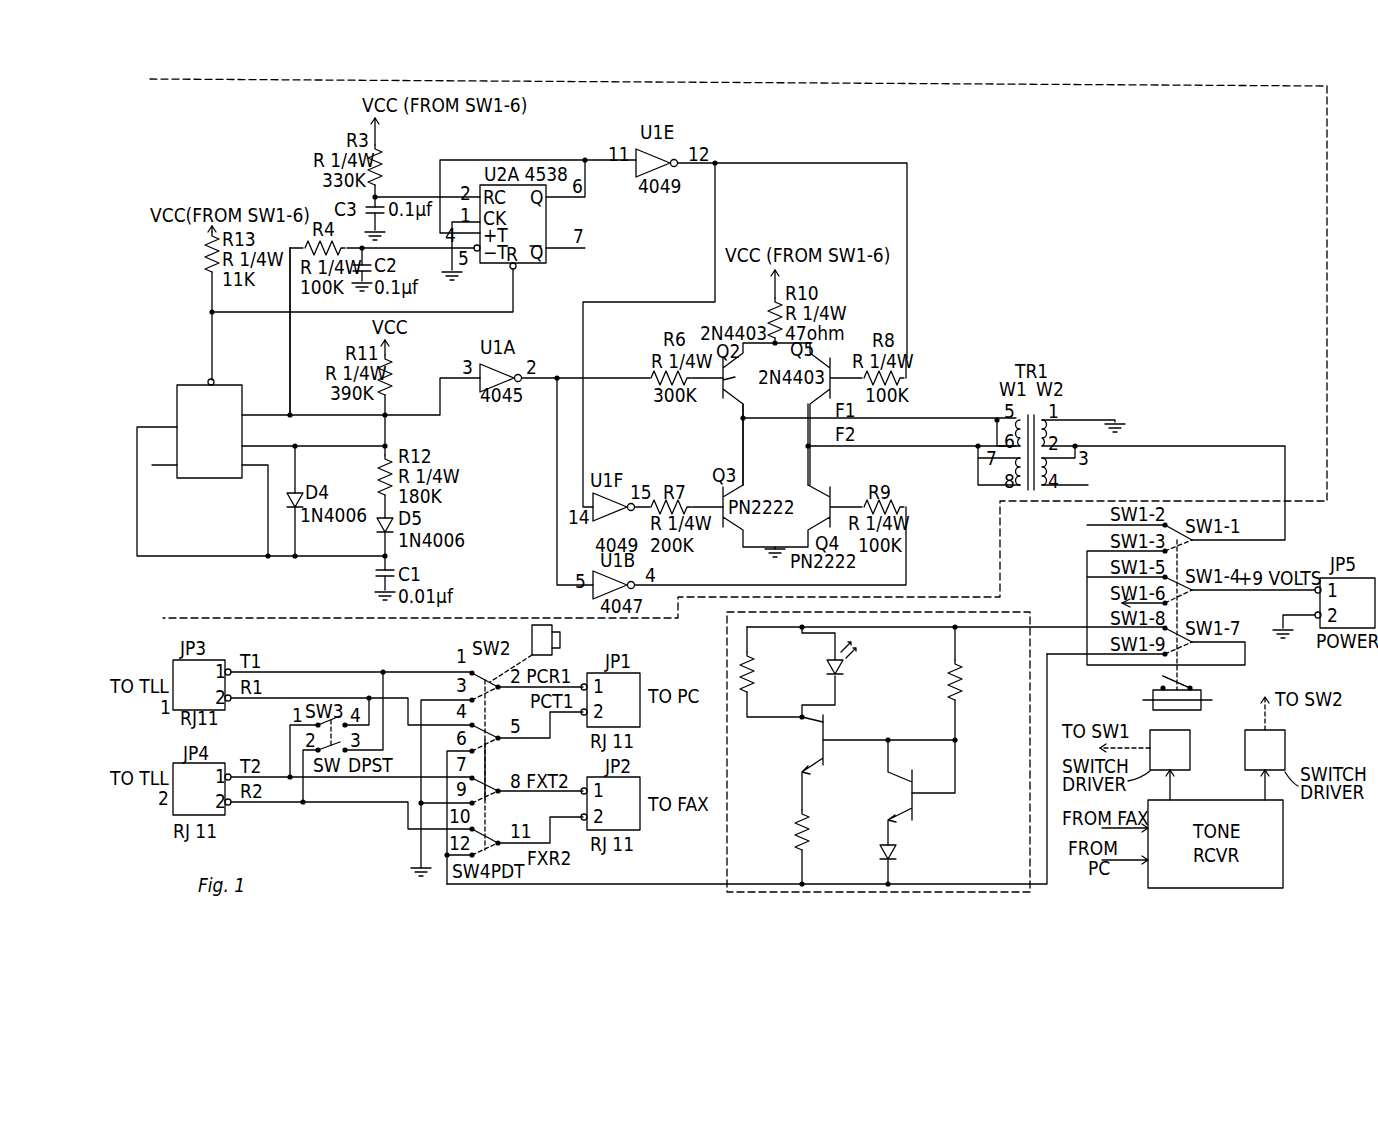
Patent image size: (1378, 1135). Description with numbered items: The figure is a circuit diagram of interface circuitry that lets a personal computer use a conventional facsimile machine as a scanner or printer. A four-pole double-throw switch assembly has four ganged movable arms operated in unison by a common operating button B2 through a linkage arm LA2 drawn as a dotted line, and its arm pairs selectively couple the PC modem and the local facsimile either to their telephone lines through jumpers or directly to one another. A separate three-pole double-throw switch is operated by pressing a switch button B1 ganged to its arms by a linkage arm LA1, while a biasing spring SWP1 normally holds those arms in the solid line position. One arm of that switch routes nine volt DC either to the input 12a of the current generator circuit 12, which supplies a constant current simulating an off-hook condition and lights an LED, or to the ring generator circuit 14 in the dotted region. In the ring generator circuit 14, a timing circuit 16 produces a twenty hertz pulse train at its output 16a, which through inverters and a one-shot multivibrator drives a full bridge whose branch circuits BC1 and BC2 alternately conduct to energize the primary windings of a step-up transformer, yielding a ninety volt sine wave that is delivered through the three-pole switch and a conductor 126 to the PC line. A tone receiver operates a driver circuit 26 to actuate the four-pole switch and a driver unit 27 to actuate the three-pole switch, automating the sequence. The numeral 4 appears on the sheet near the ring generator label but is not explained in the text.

The ring generator circuit outline 4 is at (172, 112).
The ring generator circuit 14 is at (170, 185).
The 555-type timing circuit 16 is at (197, 385).
The output of timer 16a is at (276, 410).
The current generator circuit 12 is at (722, 903).
The input of current generator circuit 12a is at (1058, 627).
The conductor 126 is at (1047, 886).
The driver circuit 26 is at (1285, 745).
The driver unit 27 is at (1190, 745).
The branch circuit BC1 is at (740, 442).
The branch circuit BC2 is at (812, 466).
The linkage arm LA1 is at (1165, 670).
The linkage arm LA2 is at (492, 764).
The switch button B1 is at (1162, 710).
The common operating button B2 is at (576, 650).
The biasing member or spring SWP1 is at (1192, 685).